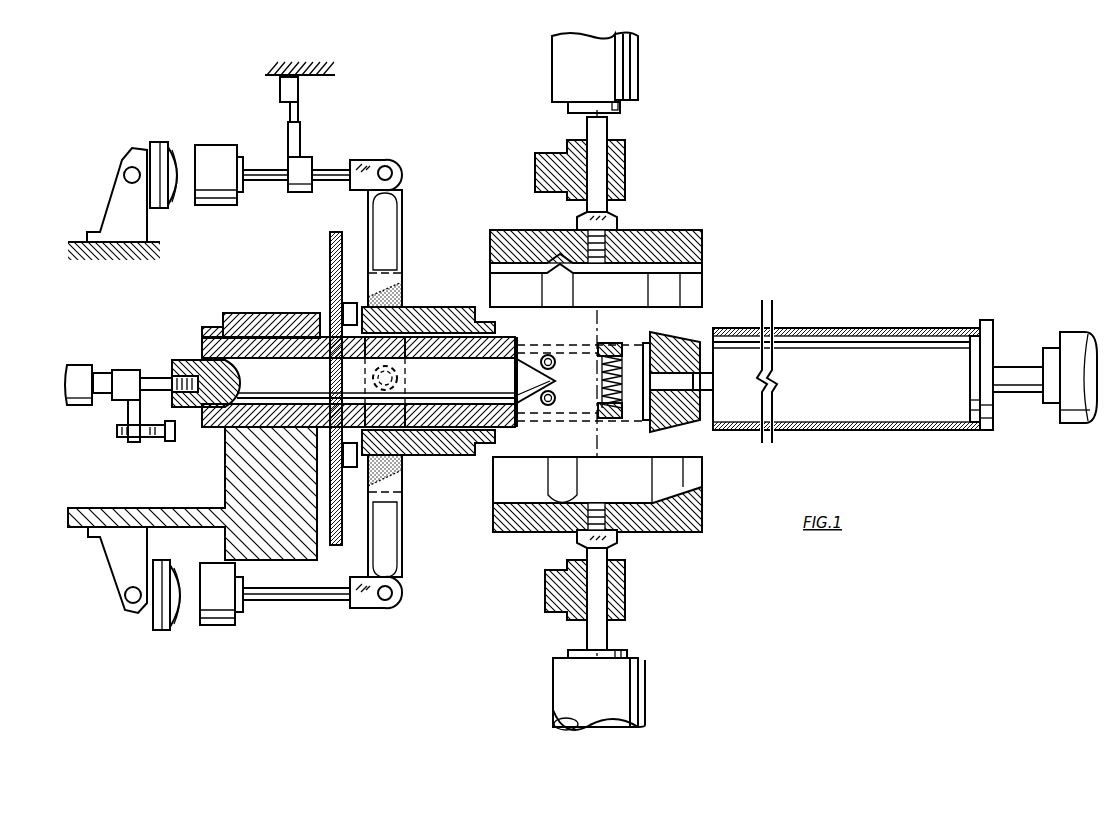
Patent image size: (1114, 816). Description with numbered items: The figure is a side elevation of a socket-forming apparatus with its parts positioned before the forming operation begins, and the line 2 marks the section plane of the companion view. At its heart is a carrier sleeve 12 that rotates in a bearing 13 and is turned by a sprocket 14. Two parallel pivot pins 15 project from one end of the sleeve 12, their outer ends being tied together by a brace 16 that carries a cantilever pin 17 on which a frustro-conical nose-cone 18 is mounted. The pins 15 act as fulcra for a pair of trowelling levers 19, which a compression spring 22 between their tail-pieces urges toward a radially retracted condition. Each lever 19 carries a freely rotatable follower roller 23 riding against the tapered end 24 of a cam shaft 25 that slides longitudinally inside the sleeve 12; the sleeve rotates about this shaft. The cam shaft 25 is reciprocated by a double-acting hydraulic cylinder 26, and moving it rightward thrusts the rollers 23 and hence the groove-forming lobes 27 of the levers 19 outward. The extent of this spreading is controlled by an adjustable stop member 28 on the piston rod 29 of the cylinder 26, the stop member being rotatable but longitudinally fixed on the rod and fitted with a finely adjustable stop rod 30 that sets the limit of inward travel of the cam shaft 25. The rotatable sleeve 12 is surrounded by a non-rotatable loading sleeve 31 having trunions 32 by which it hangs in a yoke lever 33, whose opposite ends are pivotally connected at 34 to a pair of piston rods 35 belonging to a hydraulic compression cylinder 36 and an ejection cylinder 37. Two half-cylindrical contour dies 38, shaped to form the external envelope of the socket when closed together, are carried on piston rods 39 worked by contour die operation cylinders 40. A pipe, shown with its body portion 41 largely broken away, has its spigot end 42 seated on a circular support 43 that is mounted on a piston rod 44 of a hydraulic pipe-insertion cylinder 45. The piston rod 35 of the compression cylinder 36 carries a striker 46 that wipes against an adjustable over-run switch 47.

The section line 2 is at (558, 127).
The carrier sleeve 12 is at (203, 345).
The bearing 13 is at (285, 313).
The sprocket 14 is at (330, 256).
The pivot pins 15 is at (528, 345).
The brace 16 is at (655, 342).
The cantilever pin 17 is at (700, 380).
The nose-cone 18 is at (700, 345).
The trowelling levers 19 is at (628, 343).
The compression spring 22 is at (602, 382).
The follower roller 23 is at (552, 356).
The tapered end 24 is at (515, 378).
The cam shaft 25 is at (288, 384).
The hydraulic cylinder 26 is at (100, 372).
The groove-forming lobes 27 is at (598, 425).
The stop member 28 is at (128, 412).
The piston rod 29 is at (160, 378).
The stop rod 30 is at (172, 432).
The loading sleeve 31 is at (470, 307).
The trunions 32 is at (370, 376).
The yoke lever 33 is at (378, 205).
The pivotal connection 34 is at (388, 168).
The piston rods 35 is at (340, 172).
The compression cylinder 36 is at (215, 155).
The ejection cylinder 37 is at (220, 622).
The contour dies 38 is at (655, 240).
The piston rods 39 is at (607, 130).
The contour die operation cylinders 40 is at (560, 62).
The pipe body portion 41 is at (825, 328).
The spigot end 42 is at (975, 335).
The circular support 43 is at (987, 330).
The piston rod 44 is at (1010, 367).
The pipe-insertion cylinder 45 is at (1063, 335).
The striker 46 is at (292, 190).
The over-run switch 47 is at (300, 92).